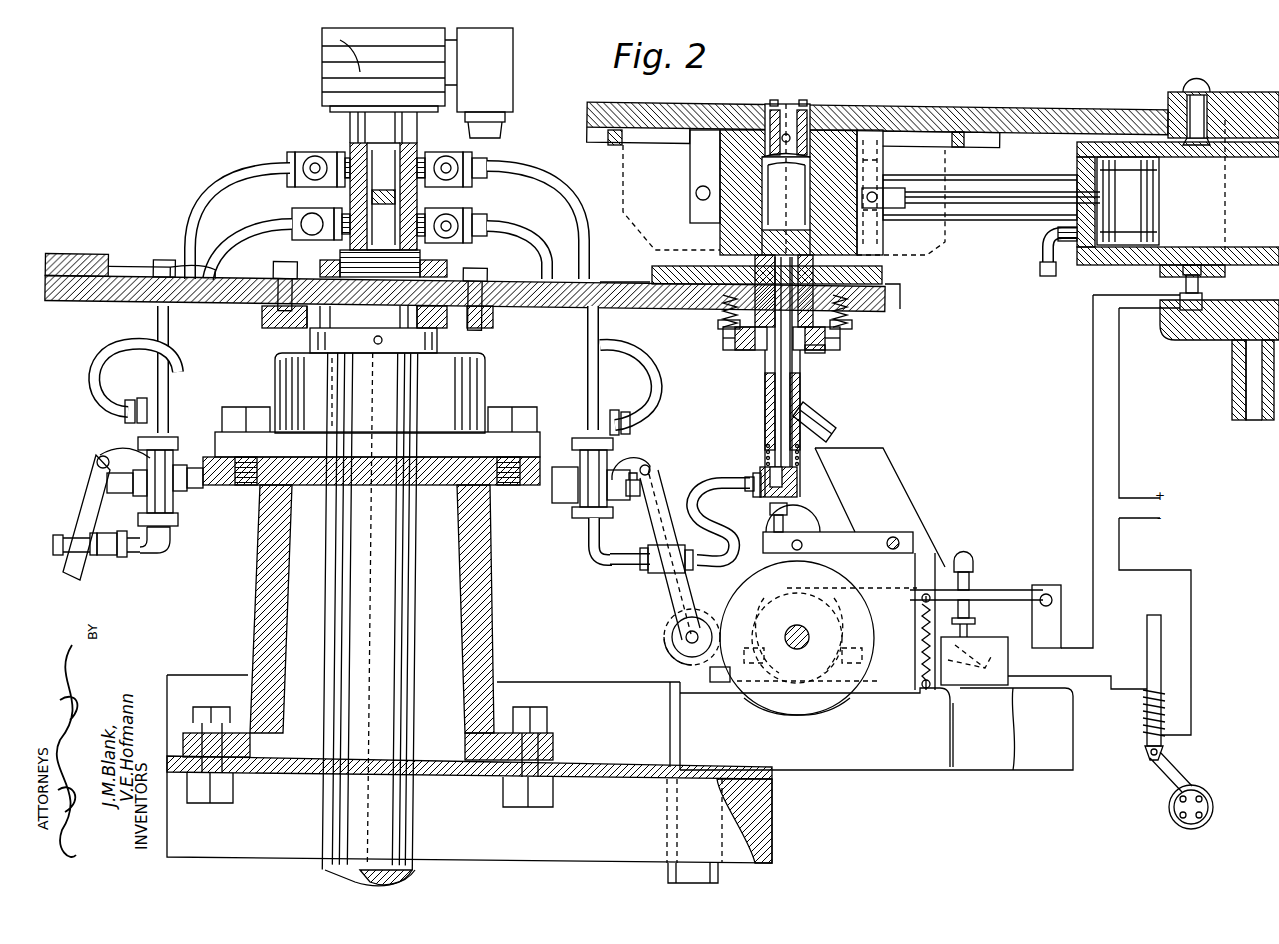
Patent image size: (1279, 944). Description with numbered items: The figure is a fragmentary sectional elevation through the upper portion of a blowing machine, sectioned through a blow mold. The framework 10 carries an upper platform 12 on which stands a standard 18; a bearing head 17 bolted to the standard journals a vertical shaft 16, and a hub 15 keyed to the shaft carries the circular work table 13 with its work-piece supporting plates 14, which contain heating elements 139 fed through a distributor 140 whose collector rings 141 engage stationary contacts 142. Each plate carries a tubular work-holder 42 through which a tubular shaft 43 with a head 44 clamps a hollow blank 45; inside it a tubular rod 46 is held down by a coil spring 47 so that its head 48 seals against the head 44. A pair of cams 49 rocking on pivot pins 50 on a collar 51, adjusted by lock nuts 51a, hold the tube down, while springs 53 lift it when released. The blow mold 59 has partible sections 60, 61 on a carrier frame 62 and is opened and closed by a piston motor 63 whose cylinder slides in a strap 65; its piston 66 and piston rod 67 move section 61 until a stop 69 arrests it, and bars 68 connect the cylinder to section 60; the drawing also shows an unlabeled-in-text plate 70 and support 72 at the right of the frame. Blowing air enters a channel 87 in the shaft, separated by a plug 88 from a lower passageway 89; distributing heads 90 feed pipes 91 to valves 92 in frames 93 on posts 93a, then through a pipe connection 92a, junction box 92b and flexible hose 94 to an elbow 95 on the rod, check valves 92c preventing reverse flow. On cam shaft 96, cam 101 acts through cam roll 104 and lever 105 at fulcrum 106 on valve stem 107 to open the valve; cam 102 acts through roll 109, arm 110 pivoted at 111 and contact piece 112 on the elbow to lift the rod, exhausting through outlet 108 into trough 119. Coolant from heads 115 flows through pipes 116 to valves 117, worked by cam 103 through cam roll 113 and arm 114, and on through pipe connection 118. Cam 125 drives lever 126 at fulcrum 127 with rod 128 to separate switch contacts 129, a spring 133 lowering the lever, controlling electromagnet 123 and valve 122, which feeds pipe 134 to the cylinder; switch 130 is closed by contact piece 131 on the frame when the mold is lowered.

The framework 10 is at (730, 885).
The upper platform 12 is at (577, 768).
The circular work table 13 is at (613, 297).
The work-piece supporting plate 14 is at (70, 252).
The hub 15 is at (458, 330).
The vertical shaft 16 is at (408, 608).
The bearing head 17 is at (472, 387).
The standard 18 is at (480, 510).
The tubular work-holder 42 is at (873, 268).
The tubular shaft 43 is at (797, 384).
The head 44 is at (720, 247).
The hollow blank 45 is at (690, 180).
The tubular rod 46 is at (767, 378).
The coil spring 47 is at (767, 468).
The head 48 is at (793, 223).
The cam 49 is at (735, 328).
The pivot pin 50 is at (730, 344).
The collar 51 is at (753, 348).
The lock nut 51a is at (813, 353).
The spring 53 is at (723, 317).
The blow mold 59 is at (667, 201).
The mold section 60 is at (718, 220).
The mold section 61 is at (880, 242).
The carrier frame 62 is at (953, 112).
The piston motor 63 is at (1094, 275).
The strap 65 is at (1275, 270).
The piston 66 is at (1153, 213).
The piston rod 67 is at (1005, 194).
The bar 68 is at (1000, 216).
The stop 69 is at (962, 148).
The end plate 70 is at (1240, 93).
The support bracket 72 is at (1235, 362).
The channel 87 is at (360, 148).
The plug 88 is at (372, 195).
The passageway 89 is at (345, 245).
The distributing head 90 is at (305, 155).
The pipe 91 is at (213, 180).
The valve 92 is at (583, 497).
The pipe connection 92a is at (592, 562).
The junction box 92b is at (653, 573).
The check valve 92c is at (620, 571).
The frame 93 is at (178, 437).
The post 93a is at (176, 380).
The flexible hose 94 is at (707, 484).
The elbow 95 is at (797, 479).
The cam shaft 96 is at (789, 647).
The cam 101 is at (777, 698).
The cam 102 is at (782, 716).
The cam 103 is at (857, 583).
The cam roll 104 is at (688, 633).
The lever 105 is at (676, 594).
The fulcrum 106 is at (650, 467).
The valve stem 107 is at (635, 498).
The outlet 108 is at (813, 417).
The roll 109 is at (807, 533).
The arm 110 is at (887, 522).
The pivot 111 is at (902, 543).
The adjustable contact piece 112 is at (770, 512).
The cam roll 113 is at (675, 645).
The arm 114 is at (90, 513).
The head 115 is at (298, 212).
The pipe 116 is at (215, 232).
The valve 117 is at (173, 493).
The pipe connection 118 is at (167, 548).
The trough 119 is at (862, 450).
The valve 122 is at (1173, 820).
The electromagnet 123 is at (1139, 711).
The cam 125 is at (802, 695).
The lever 126 is at (1002, 593).
The fulcrum 127 is at (1047, 590).
The rod 128 is at (971, 574).
The switch contacts 129 is at (972, 659).
The switch 130 is at (1202, 299).
The adjustable contact piece 131 is at (1180, 291).
The spring 133 is at (930, 692).
The pipe 134 is at (1034, 259).
The heating element 139 is at (900, 292).
The distributor 140 is at (345, 70).
The collector ring 141 is at (332, 40).
The stationary contact 142 is at (460, 88).